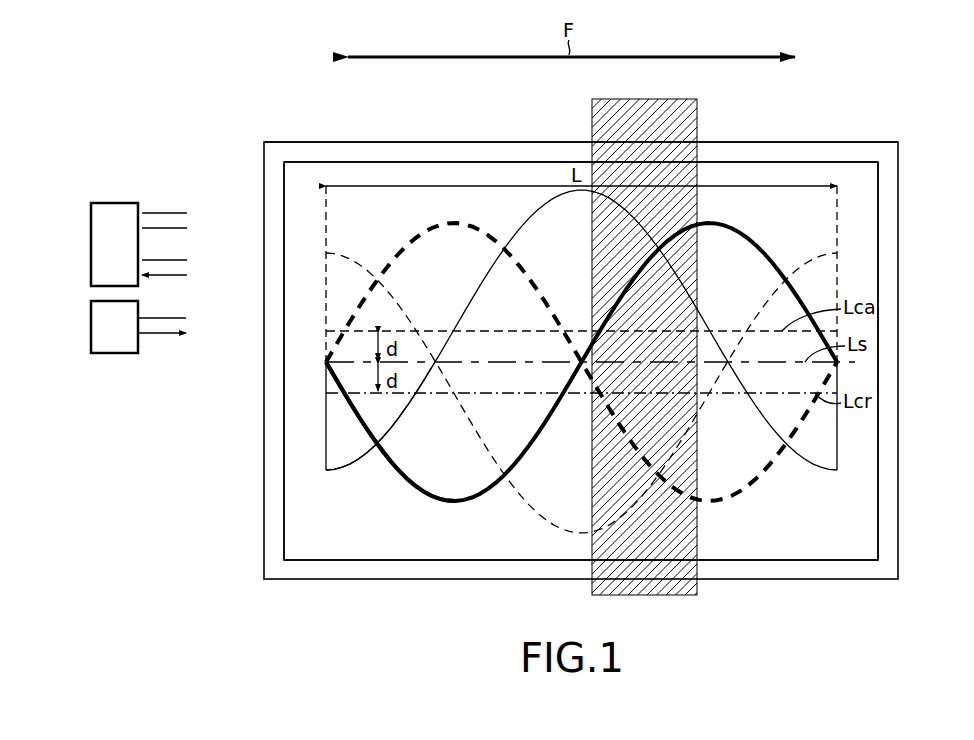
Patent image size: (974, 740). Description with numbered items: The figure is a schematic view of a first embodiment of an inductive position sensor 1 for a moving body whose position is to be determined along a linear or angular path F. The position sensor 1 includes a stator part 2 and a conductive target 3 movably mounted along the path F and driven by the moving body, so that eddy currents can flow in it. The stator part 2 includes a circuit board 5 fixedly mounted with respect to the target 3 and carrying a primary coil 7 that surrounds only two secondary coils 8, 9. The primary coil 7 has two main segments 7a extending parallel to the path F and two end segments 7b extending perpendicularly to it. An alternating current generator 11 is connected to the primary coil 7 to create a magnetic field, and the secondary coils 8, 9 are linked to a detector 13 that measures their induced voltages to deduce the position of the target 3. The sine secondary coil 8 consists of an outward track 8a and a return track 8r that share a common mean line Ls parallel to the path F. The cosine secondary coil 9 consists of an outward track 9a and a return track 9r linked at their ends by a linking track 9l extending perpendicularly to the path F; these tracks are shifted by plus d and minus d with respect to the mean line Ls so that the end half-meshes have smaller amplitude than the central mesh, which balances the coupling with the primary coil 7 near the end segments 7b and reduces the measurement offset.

The position sensor 1 is at (149, 468).
The stator part 2 is at (901, 162).
The target 3 is at (690, 118).
The circuit board 5 is at (359, 151).
The primary coil 7 is at (802, 160).
The main segments 7a is at (443, 162).
The end segments 7b is at (284, 522).
The sine secondary coil 8 is at (463, 506).
The outward track 8a is at (420, 490).
The return track 8r is at (748, 488).
The cosine secondary coil 9 is at (469, 295).
The outward track 9a is at (392, 428).
The return track 9r is at (770, 300).
The linking track 9l is at (326, 440).
The alternating current generator 11 is at (138, 327).
The detector 13 is at (139, 244).